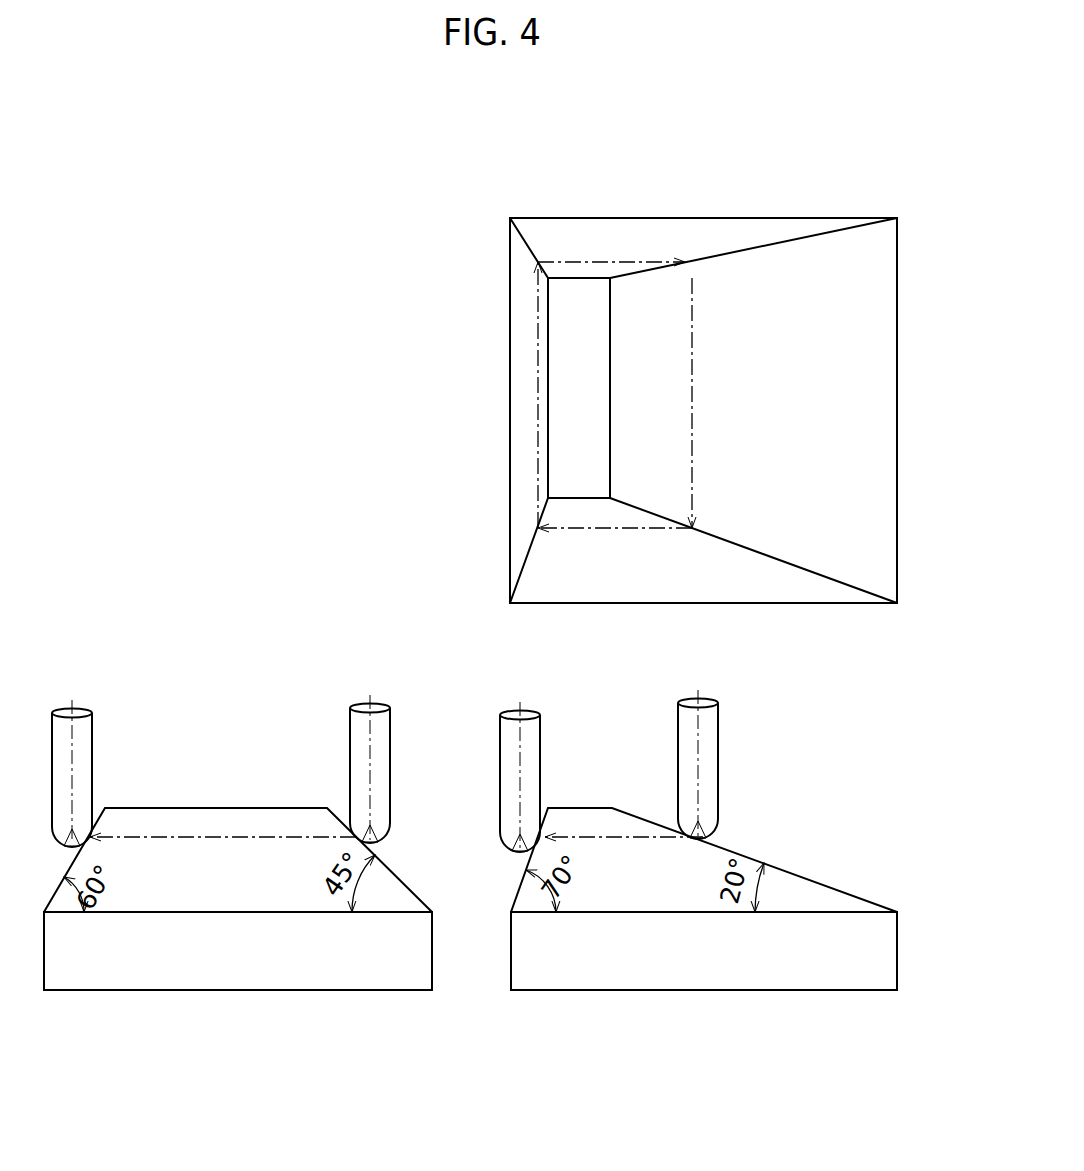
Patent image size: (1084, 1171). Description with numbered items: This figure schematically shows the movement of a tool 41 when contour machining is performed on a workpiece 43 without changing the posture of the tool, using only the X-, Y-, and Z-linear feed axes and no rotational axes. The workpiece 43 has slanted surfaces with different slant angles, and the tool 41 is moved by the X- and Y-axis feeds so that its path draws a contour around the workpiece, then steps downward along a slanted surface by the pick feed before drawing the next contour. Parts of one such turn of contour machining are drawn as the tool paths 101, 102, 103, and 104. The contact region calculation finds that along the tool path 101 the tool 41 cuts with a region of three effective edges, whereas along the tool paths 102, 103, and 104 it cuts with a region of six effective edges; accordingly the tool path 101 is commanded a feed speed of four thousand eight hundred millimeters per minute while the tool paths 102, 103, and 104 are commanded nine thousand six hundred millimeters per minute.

The workpiece 43 is at (740, 217).
The tool 41 is at (92, 738).
The tool path 101 is at (698, 405).
The tool path 102 is at (613, 530).
The tool path 103 is at (537, 468).
The tool path 104 is at (611, 260).